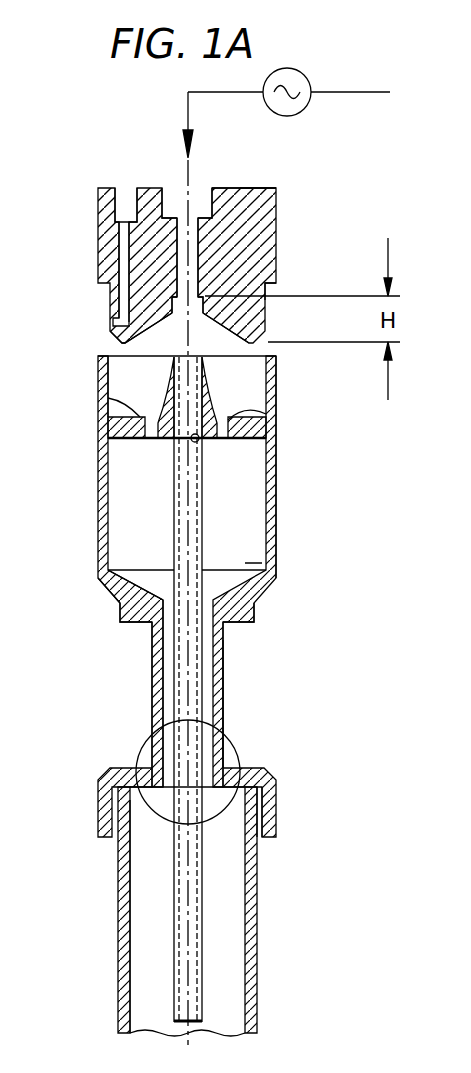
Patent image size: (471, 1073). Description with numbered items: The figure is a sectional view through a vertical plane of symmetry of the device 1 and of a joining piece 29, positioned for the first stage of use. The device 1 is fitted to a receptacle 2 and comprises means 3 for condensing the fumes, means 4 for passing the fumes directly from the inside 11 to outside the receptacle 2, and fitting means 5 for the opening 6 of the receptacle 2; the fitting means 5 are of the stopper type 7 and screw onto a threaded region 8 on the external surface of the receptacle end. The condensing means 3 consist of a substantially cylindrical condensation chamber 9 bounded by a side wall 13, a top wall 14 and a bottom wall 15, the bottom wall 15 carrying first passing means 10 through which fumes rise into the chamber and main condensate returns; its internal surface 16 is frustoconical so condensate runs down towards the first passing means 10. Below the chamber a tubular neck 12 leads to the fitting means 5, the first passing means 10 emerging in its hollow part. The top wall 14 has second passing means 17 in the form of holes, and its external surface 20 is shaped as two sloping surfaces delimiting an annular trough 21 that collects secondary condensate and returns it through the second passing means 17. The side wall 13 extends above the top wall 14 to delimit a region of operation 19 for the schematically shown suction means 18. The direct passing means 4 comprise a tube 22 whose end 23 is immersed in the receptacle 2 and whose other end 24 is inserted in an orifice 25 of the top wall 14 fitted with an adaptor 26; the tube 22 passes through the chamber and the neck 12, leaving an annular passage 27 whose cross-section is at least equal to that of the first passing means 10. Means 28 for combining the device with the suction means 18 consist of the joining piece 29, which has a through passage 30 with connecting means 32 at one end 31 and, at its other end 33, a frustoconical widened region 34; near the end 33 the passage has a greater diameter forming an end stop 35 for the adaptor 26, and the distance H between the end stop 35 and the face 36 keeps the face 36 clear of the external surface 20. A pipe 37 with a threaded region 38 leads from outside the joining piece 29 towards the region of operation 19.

The device 1 is at (306, 497).
The receptacle 2 is at (258, 957).
The means for condensing the fumes 3 is at (277, 540).
The means for passing the fumes directly 4 is at (203, 663).
The fitting means 5 is at (277, 793).
The opening 6 is at (217, 790).
The stopper 7 is at (254, 767).
The threaded region 8 is at (262, 822).
The condensation chamber 9 is at (263, 563).
The first passing means 10 is at (254, 608).
The inside 11 is at (142, 893).
The tubular neck 12 is at (223, 700).
The side wall 13 is at (98, 483).
The top wall 14 is at (108, 425).
The bottom wall 15 is at (128, 610).
The internal surface 16 is at (120, 580).
The second passing means 17 is at (230, 438).
The suction means 18 is at (340, 95).
The region of operation 19 is at (108, 367).
The external surface 20 is at (137, 415).
The annular trough 21 is at (267, 418).
The tube 22 is at (172, 518).
The end 23 is at (262, 1030).
The other end 24 is at (202, 443).
The orifice 25 is at (117, 441).
The adaptor 26 is at (205, 378).
The annular passage 27 is at (168, 682).
The means for combining 28 is at (233, 183).
The joining piece 29 is at (260, 223).
The through passage 30 is at (187, 257).
The end 31 is at (274, 188).
The connecting means 32 is at (170, 190).
The other end 33 is at (274, 264).
The widened region 34 is at (215, 327).
The end stop 35 is at (170, 300).
The face 36 is at (122, 343).
The pipe 37 is at (118, 223).
The threaded region 38 is at (125, 192).